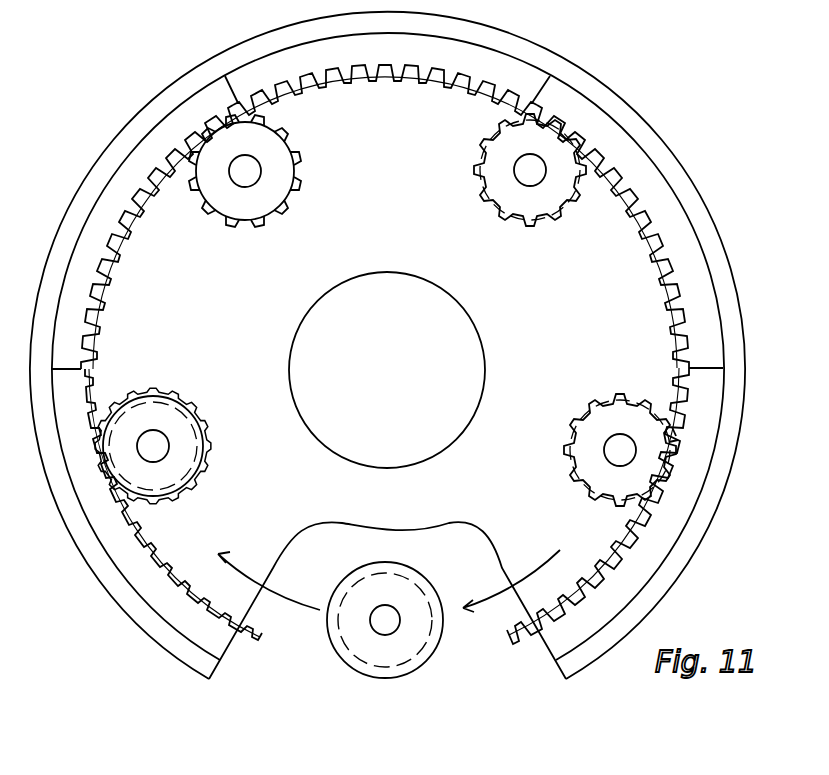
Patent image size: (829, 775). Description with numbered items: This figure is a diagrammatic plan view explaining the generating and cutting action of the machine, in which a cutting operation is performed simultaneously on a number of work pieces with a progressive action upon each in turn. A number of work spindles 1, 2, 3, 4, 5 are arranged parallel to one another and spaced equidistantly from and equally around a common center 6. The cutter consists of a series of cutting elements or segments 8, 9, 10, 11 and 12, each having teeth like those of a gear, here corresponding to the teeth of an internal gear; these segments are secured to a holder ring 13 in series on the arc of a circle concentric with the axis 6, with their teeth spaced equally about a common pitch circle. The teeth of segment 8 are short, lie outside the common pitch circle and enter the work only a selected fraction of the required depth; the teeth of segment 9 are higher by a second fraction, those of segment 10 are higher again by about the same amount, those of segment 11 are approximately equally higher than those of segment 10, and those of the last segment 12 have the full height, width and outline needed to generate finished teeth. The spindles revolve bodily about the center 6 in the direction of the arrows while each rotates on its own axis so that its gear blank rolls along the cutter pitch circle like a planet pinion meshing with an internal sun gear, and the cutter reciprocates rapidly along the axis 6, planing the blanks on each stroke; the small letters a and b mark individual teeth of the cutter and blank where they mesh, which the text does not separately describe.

The work spindle 1 is at (388, 618).
The work spindle 2 is at (155, 446).
The work spindle 3 is at (252, 171).
The work spindle 4 is at (531, 172).
The work spindle 5 is at (616, 450).
The common center 6 is at (388, 372).
The cutting segment 8 is at (122, 543).
The cutter segment 9 is at (97, 250).
The cutter segment 10 is at (432, 60).
The cutter segment 11 is at (650, 223).
The cutter segment 12 is at (632, 562).
The holder ring 13 is at (98, 176).
The tooth a is at (672, 427).
The tooth b is at (669, 443).